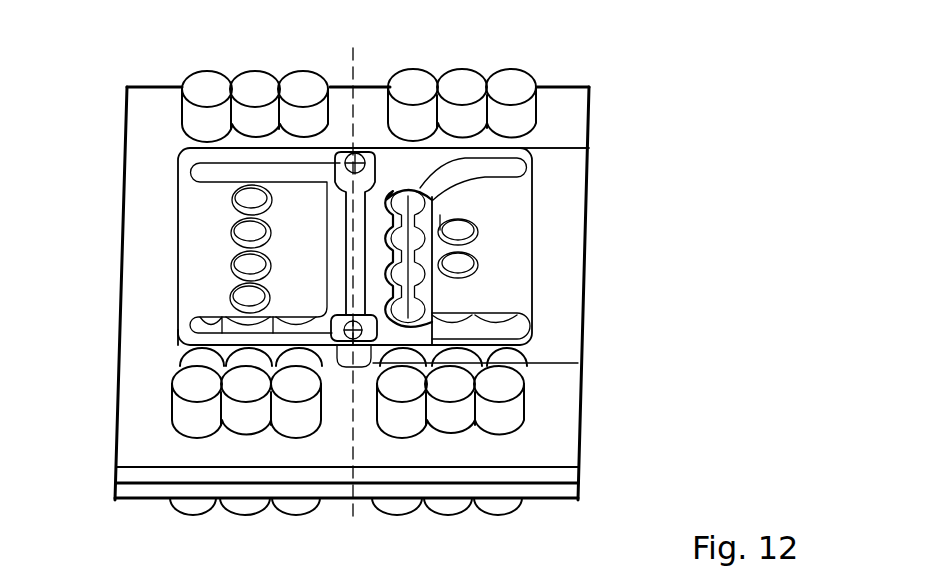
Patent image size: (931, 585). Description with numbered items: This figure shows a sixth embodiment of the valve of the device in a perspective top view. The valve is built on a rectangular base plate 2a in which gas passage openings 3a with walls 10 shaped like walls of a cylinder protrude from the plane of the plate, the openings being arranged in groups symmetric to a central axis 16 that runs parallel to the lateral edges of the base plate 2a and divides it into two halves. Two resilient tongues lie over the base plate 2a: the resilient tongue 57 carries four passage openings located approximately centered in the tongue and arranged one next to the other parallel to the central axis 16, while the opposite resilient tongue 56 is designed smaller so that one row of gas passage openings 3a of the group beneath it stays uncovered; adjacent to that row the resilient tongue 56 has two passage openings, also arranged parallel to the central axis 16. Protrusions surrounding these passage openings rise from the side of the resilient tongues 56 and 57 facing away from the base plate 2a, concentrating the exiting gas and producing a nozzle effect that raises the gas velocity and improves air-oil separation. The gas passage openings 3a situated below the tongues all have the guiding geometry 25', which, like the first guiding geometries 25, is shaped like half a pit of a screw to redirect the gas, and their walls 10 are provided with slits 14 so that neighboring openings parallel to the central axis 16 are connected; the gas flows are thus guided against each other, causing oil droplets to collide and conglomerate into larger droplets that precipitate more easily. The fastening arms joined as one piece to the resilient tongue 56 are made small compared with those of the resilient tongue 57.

The base plate 2a is at (560, 418).
The gas passage openings 3a is at (401, 194).
The walls 10 is at (418, 192).
The slits 14 is at (430, 200).
The central axis 16 is at (347, 527).
The first guiding geometries 25 is at (158, 245).
The guiding geometry 25' is at (584, 288).
The resilient tongue 56 is at (490, 213).
The resilient tongue 57 is at (213, 208).